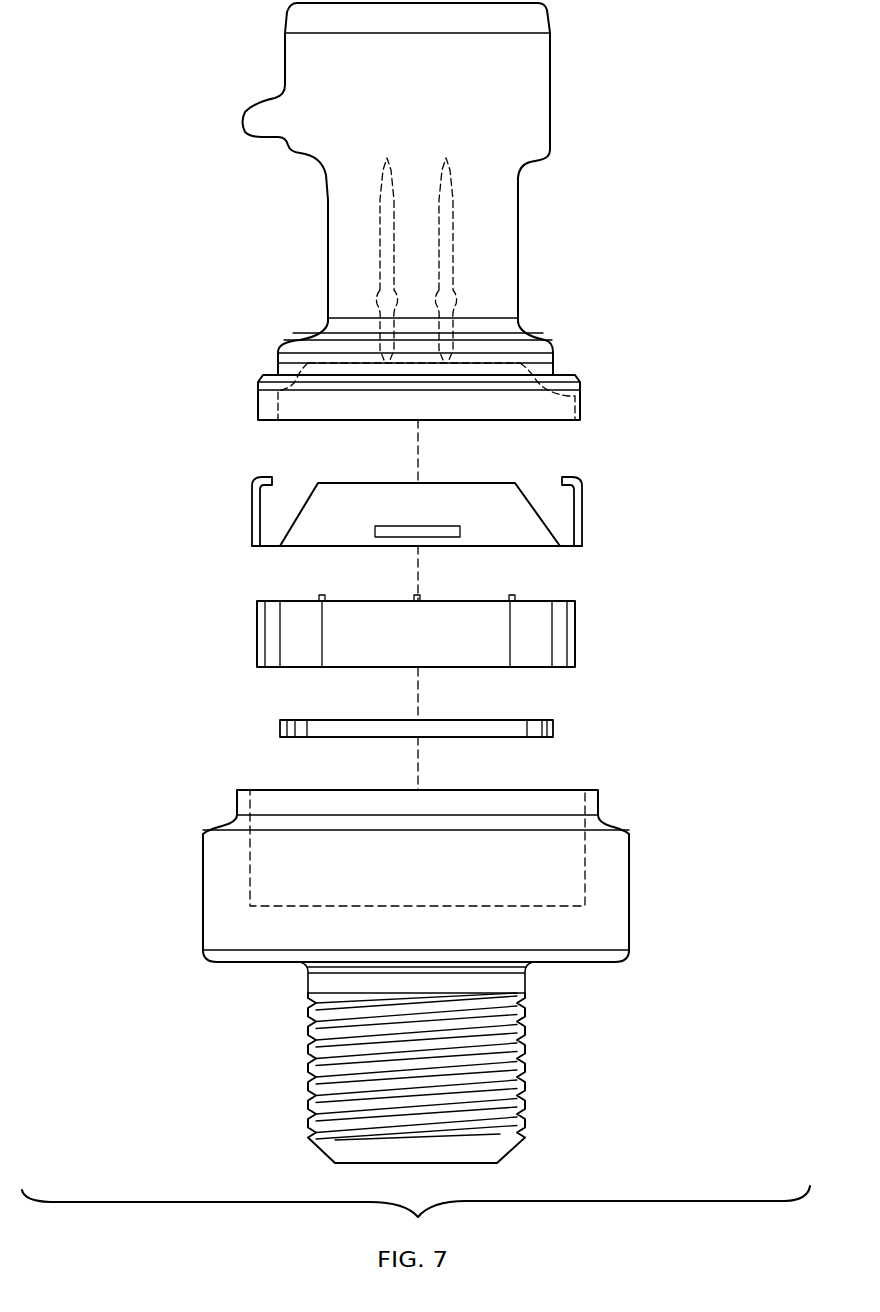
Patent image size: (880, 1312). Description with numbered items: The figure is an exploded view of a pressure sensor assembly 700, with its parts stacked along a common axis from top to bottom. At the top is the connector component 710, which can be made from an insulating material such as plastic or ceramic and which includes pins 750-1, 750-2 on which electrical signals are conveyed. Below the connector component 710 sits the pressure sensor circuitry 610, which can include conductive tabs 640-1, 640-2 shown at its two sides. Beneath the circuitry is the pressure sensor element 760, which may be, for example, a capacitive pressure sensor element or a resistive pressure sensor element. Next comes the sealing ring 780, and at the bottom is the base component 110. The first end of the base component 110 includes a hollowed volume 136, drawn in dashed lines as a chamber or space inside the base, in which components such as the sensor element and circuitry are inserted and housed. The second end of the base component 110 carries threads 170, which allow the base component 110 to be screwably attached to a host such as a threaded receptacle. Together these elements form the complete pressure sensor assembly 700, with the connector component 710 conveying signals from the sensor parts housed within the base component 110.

The pressure sensor assembly 700 is at (177, 71).
The connector component 710 is at (550, 121).
The pin 750-1 is at (378, 247).
The pin 750-2 is at (455, 255).
The pressure sensor circuitry 610 is at (410, 482).
The conductive tab 640-1 is at (252, 494).
The conductive tab 640-2 is at (617, 502).
The pressure sensor element 760 is at (577, 653).
The sealing ring 780 is at (556, 732).
The base component 110 is at (468, 976).
The hollowed volume 136 is at (587, 884).
The threads 170 is at (525, 1042).